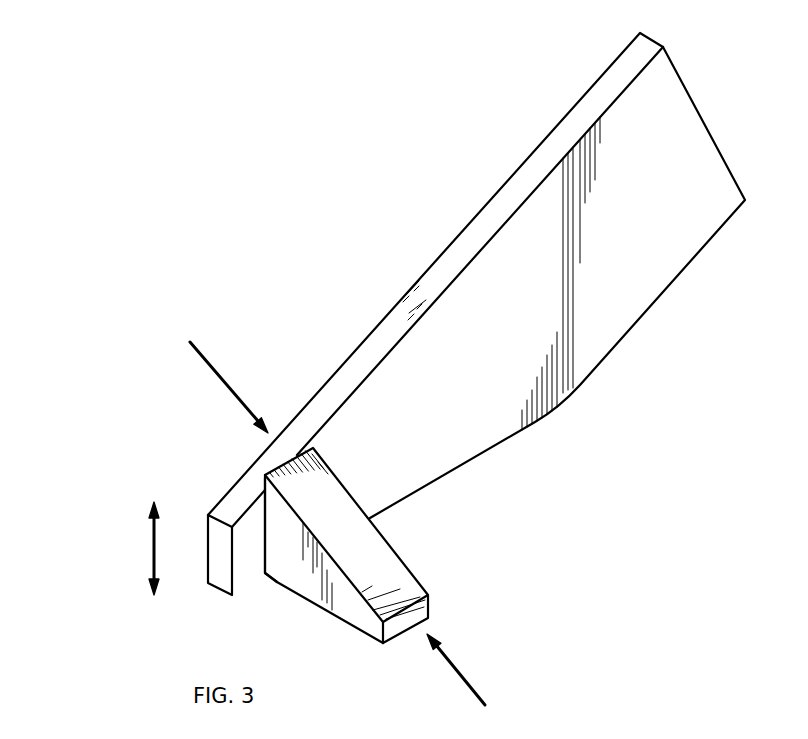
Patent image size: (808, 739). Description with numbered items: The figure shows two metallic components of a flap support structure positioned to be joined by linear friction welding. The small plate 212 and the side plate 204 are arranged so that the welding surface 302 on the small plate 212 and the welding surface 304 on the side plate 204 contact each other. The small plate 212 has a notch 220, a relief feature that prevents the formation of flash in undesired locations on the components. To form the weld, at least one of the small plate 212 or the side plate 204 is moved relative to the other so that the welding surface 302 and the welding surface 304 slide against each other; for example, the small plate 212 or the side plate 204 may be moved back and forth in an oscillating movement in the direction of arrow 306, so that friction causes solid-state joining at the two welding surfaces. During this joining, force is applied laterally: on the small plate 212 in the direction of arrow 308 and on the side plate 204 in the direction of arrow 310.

The side plate 204 is at (707, 122).
The small plate 212 is at (397, 550).
The welding surface 302 is at (262, 552).
The welding surface 304 is at (263, 518).
The notch 220 is at (270, 578).
The arrow 306 is at (152, 553).
The arrow 308 is at (460, 673).
The arrow 310 is at (223, 377).